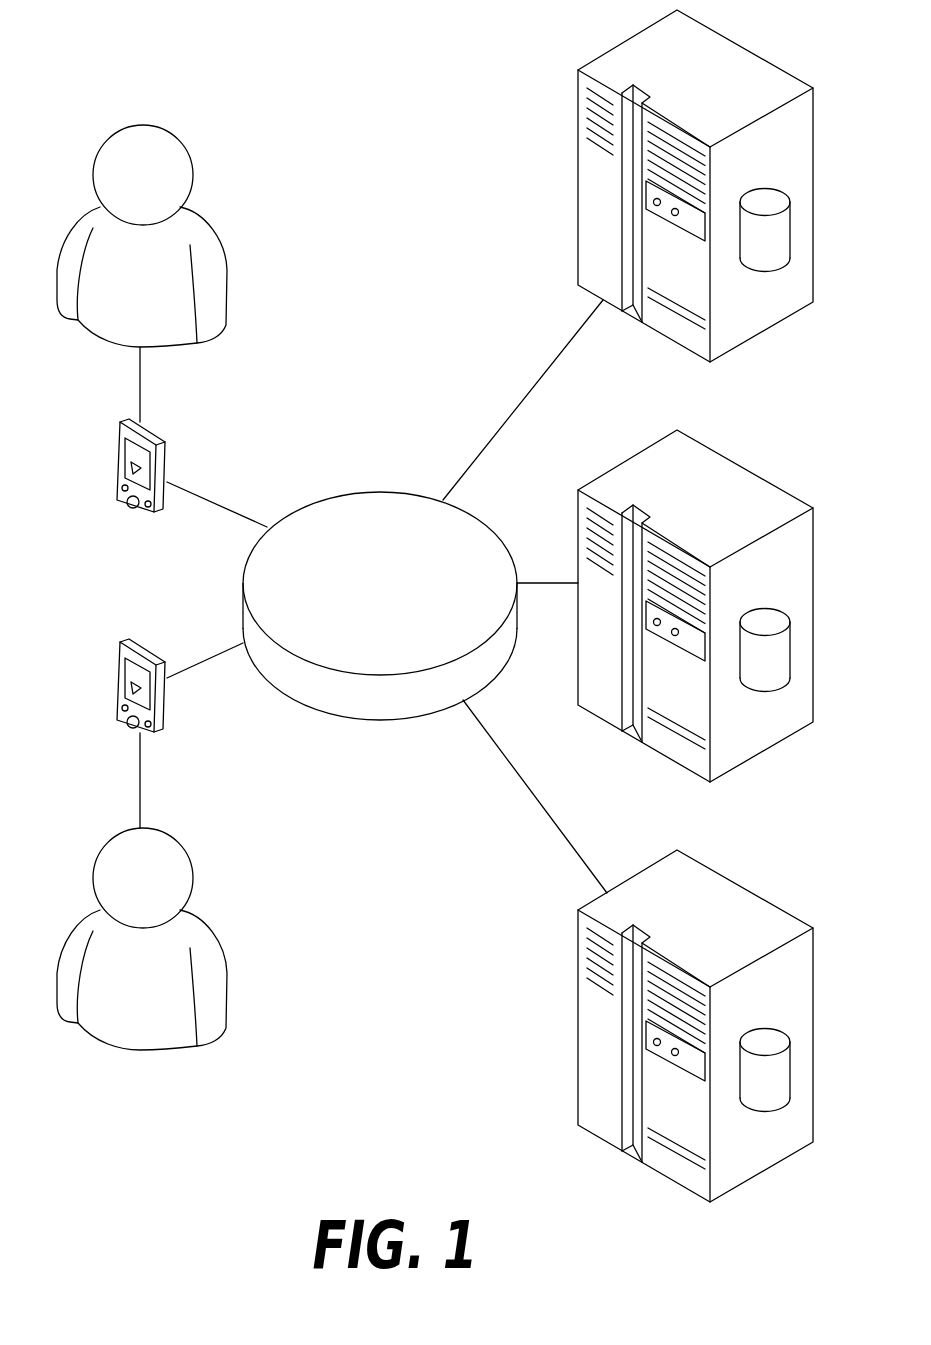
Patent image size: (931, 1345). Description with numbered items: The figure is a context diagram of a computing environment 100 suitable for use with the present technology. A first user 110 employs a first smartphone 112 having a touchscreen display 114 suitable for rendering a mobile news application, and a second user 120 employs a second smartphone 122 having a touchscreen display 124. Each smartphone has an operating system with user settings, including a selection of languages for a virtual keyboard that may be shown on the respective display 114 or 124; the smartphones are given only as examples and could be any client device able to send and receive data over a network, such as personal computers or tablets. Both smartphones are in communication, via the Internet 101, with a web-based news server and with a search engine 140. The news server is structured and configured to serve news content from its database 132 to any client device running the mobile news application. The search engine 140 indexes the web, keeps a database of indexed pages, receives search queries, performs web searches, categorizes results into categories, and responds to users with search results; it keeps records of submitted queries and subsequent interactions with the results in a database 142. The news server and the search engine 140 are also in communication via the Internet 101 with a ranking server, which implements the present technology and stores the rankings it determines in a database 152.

The computing environment 100 is at (358, 37).
The Internet 101 is at (360, 595).
The first user 110 is at (183, 141).
The first smartphone 112 is at (117, 432).
The touchscreen display 114 is at (128, 461).
The second user 120 is at (177, 840).
The second smartphone 122 is at (117, 652).
The touchscreen display 124 is at (128, 681).
The database 132 is at (745, 252).
The search engine 140 is at (752, 760).
The database 142 is at (745, 672).
The database 152 is at (745, 1092).